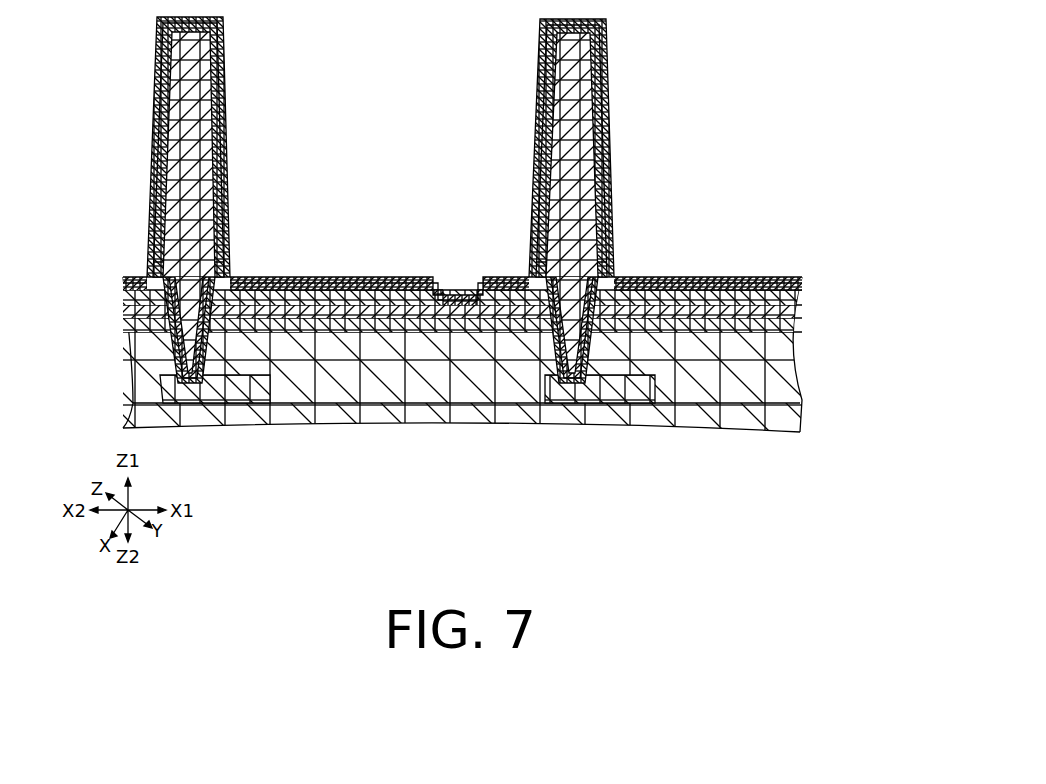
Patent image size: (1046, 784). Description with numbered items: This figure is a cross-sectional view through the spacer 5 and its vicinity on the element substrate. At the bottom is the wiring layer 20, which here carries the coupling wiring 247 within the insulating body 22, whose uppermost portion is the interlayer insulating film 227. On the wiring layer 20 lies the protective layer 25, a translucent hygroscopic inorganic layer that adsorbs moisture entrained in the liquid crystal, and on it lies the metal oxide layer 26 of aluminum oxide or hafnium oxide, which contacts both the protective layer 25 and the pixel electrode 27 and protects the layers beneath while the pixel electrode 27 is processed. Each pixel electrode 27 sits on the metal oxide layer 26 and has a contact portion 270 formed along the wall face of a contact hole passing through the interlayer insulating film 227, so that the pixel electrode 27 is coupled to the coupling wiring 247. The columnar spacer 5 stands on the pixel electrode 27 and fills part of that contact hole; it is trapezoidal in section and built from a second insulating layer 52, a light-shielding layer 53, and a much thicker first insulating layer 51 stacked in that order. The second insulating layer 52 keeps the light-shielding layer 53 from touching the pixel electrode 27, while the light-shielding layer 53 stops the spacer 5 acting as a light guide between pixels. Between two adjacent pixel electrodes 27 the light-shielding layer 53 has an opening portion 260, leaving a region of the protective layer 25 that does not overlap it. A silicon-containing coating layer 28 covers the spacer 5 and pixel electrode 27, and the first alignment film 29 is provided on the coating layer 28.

The spacer 5 is at (439, 205).
The wiring layer 20 is at (772, 432).
The insulating body 22 is at (496, 408).
The protective layer 25 is at (783, 328).
The metal oxide layer 26 is at (778, 313).
The pixel electrode 27 is at (377, 277).
The coating layer 28 is at (598, 70).
The first alignment film 29 is at (606, 46).
The first insulating layer 51 is at (205, 205).
The second insulating layer 52 is at (212, 277).
The light-shielding layer 53 is at (222, 262).
The interlayer insulating film 227 is at (778, 380).
The coupling wiring 247 is at (233, 390).
The opening portion 260 is at (470, 293).
The contact portion 270 is at (204, 386).